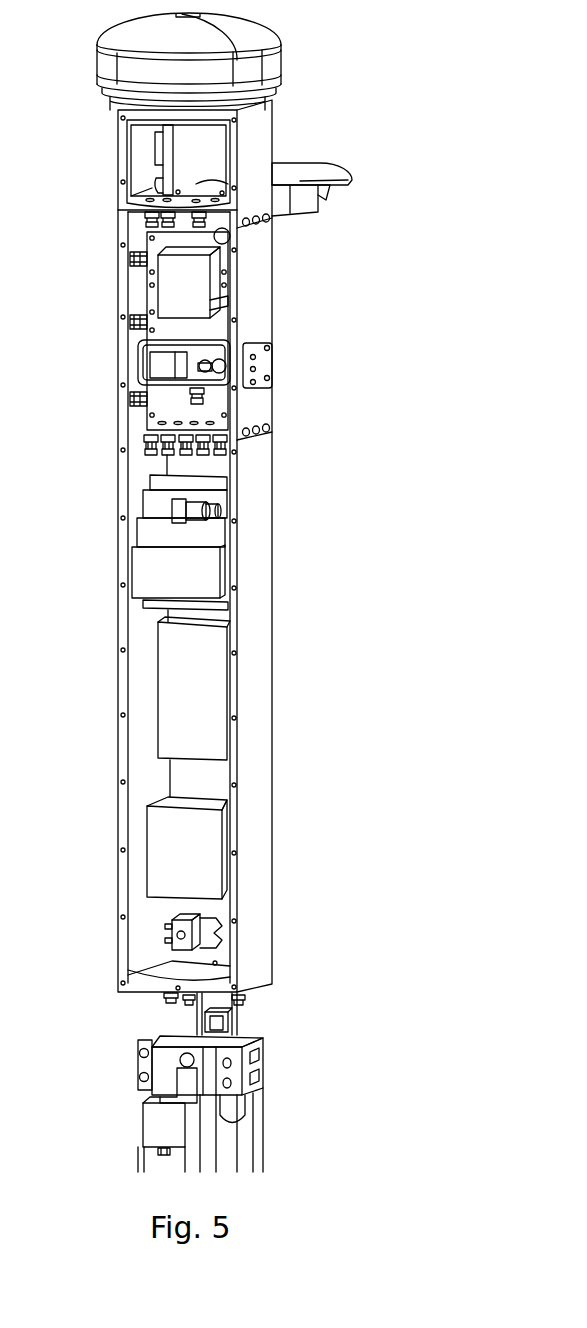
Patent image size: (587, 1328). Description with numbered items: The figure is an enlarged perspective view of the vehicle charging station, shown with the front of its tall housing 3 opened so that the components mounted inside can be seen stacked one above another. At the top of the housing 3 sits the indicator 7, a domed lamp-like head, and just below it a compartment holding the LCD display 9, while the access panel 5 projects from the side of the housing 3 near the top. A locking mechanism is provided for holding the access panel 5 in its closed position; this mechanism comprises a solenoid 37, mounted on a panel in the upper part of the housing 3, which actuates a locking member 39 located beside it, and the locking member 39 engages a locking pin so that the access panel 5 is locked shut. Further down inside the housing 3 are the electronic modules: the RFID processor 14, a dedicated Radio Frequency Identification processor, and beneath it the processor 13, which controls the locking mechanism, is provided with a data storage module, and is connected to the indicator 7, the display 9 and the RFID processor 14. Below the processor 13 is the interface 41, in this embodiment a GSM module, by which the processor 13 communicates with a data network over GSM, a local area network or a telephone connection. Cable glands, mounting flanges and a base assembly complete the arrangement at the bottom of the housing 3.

The housing 3 is at (273, 458).
The access panel 5 is at (325, 167).
The indicator 7 is at (270, 75).
The LCD display 9 is at (167, 160).
The processor 13 is at (175, 675).
The RFID processor 14 is at (163, 572).
The solenoid 37 is at (158, 368).
The locking member 39 is at (226, 368).
The interface 41 is at (162, 867).